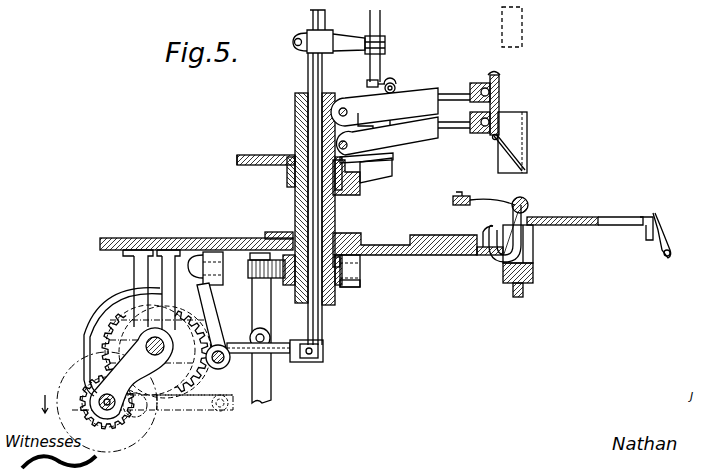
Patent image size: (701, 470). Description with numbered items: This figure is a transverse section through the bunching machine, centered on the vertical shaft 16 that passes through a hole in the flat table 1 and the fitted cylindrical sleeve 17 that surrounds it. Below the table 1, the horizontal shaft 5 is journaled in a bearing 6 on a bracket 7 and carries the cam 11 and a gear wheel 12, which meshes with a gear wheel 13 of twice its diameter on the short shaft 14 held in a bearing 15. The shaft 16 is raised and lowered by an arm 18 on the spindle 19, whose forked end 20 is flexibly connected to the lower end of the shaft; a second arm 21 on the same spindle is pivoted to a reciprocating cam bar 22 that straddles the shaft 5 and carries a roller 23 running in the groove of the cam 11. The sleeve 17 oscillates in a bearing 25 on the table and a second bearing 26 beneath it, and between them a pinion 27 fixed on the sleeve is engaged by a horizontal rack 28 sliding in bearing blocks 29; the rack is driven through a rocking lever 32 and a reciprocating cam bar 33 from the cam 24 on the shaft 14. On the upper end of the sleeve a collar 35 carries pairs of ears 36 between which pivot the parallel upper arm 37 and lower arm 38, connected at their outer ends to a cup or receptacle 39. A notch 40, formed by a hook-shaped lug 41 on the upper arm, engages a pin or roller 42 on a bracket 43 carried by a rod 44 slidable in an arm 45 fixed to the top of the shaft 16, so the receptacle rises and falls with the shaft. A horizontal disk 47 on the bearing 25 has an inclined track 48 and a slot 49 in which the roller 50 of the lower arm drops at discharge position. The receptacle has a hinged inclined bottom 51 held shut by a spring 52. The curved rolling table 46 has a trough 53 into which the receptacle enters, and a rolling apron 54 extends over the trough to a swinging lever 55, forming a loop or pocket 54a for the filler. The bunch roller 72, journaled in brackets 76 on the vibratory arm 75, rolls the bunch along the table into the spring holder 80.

The table 1 is at (222, 240).
The horizontal shaft 5 is at (92, 393).
The bearing 6 is at (110, 418).
The bracket 7 is at (135, 272).
The cam 11 is at (73, 360).
The gear wheel 12 is at (127, 420).
The gear wheel 13 is at (117, 322).
The short shaft 14 is at (149, 351).
The bearing 15 is at (170, 372).
The vertical shaft 16 is at (312, 68).
The cylindrical sleeve 17 is at (305, 90).
The arm 18 is at (283, 355).
The spindle 19 is at (225, 366).
The forked end 20 is at (320, 342).
The second arm 21 is at (223, 383).
The reciprocating cam bar 22 is at (202, 408).
The roller 23 is at (147, 415).
The cam 24 is at (107, 302).
The bearing 25 is at (393, 247).
The second bearing 26 is at (328, 305).
The pinion 27 is at (362, 270).
The horizontal rack 28 is at (278, 233).
The bearing blocks 29 is at (208, 252).
The rocking lever 32 is at (271, 385).
The reciprocating cam bar 33 is at (237, 342).
The collar 35 is at (295, 125).
The ears 36 is at (358, 128).
The upper arm 37 is at (428, 95).
The lower arm 38 is at (418, 138).
The cup or receptacle 39 is at (500, 133).
The notch 40 is at (397, 81).
The hook-shaped lug 41 is at (392, 82).
The pin or roller 42 is at (372, 85).
The bracket 43 is at (367, 82).
The rod 44 is at (382, 38).
The arm 45 is at (350, 33).
The rolling table 46 is at (592, 227).
The horizontal disk 47 is at (237, 162).
The inclined track 48 is at (258, 156).
The slot 49 is at (392, 180).
The roller 50 is at (395, 158).
The inclined bottom 51 is at (522, 158).
The spring 52 is at (492, 140).
The trough 53 is at (530, 255).
The rolling apron 54 is at (488, 199).
The loop or pocket 54a is at (490, 253).
The swinging lever 55 is at (458, 205).
The bunch roller 72 is at (530, 200).
The vibratory arm 75 is at (531, 293).
The brackets 76 is at (527, 262).
The spring holder 80 is at (670, 240).